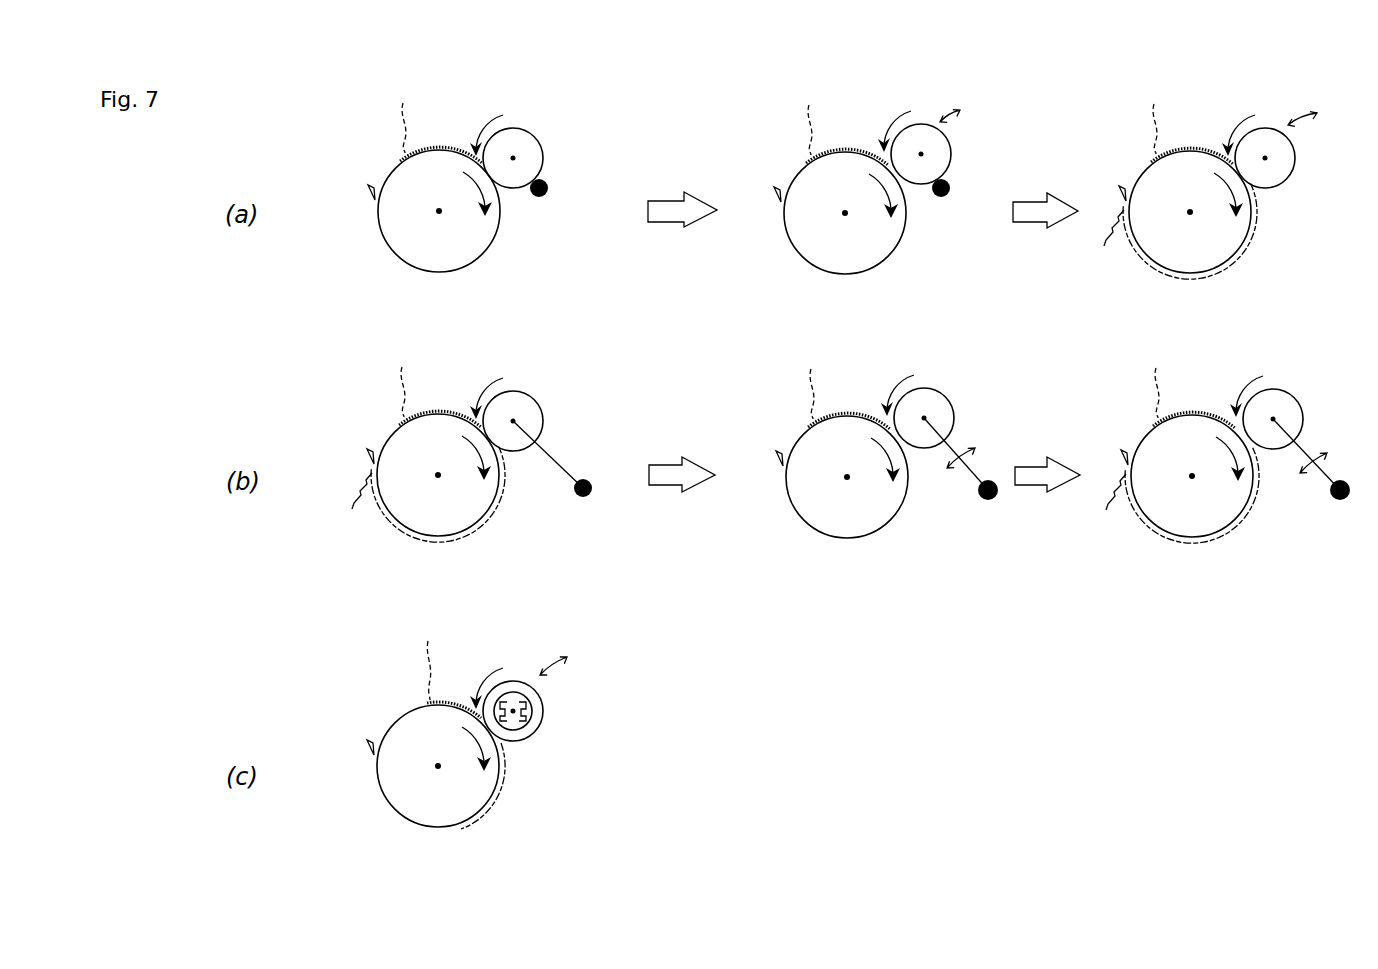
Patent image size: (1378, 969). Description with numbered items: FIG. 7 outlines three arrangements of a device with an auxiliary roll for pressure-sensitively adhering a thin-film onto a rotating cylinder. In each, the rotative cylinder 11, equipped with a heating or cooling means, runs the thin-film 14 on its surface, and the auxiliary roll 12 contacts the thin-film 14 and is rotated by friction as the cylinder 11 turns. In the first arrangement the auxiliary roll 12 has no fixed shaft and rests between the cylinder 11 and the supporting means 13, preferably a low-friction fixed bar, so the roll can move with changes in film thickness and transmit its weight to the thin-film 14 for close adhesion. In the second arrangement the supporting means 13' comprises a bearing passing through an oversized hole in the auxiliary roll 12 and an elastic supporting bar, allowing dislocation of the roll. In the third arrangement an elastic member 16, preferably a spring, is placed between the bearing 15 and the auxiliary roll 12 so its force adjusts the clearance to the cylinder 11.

The cylinder 11 is at (408, 240).
The auxiliary roll 12 is at (527, 143).
The supporting means for an auxiliary roll 13 is at (537, 223).
The supporting means for an auxiliary roll 13' is at (562, 494).
The thin-film 14 is at (402, 105).
The bearing 15 is at (513, 714).
The elastic member 16 is at (542, 715).